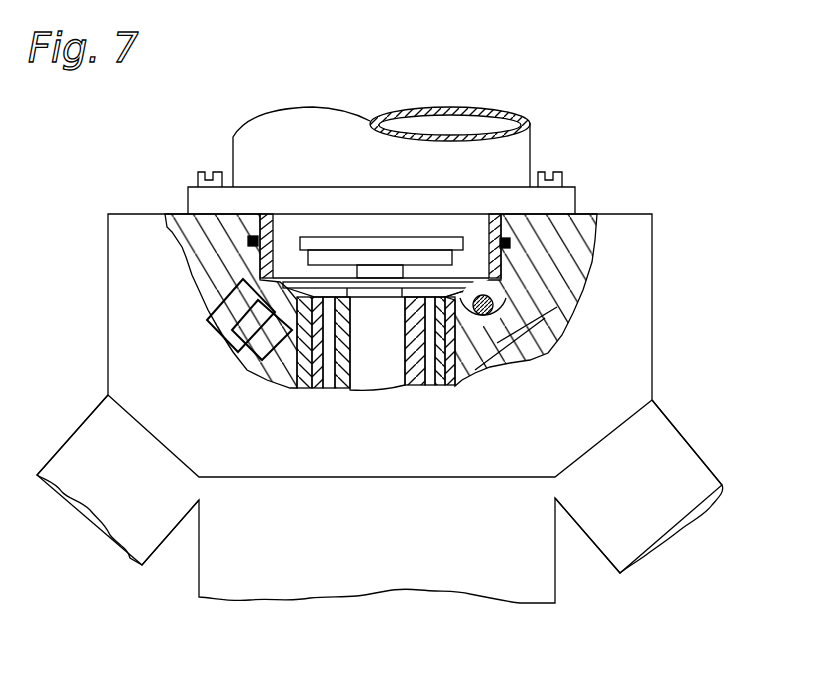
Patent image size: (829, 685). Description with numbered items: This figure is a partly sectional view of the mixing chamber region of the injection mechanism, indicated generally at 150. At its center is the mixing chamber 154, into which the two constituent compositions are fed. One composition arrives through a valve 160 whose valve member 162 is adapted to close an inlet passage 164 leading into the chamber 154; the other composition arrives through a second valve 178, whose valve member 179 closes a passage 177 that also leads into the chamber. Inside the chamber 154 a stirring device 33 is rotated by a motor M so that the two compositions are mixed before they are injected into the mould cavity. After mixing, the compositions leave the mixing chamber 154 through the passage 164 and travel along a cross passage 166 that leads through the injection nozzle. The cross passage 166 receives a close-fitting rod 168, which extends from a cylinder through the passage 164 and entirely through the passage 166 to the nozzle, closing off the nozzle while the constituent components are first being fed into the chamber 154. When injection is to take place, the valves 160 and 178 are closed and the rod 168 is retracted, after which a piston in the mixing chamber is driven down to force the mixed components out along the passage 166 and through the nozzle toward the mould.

The sealing assembly 150 is at (630, 177).
The mixing chamber 154 is at (487, 247).
The stirring device 33 is at (452, 292).
The rod 168 is at (493, 298).
The inlet passage 164 is at (507, 318).
The valve member 162 is at (523, 355).
The cross passage 166 is at (490, 328).
The passage 177 is at (268, 326).
The valve member 179 is at (266, 327).
The valve 160 is at (677, 438).
The valve 178 is at (97, 503).
The motor M is at (318, 595).